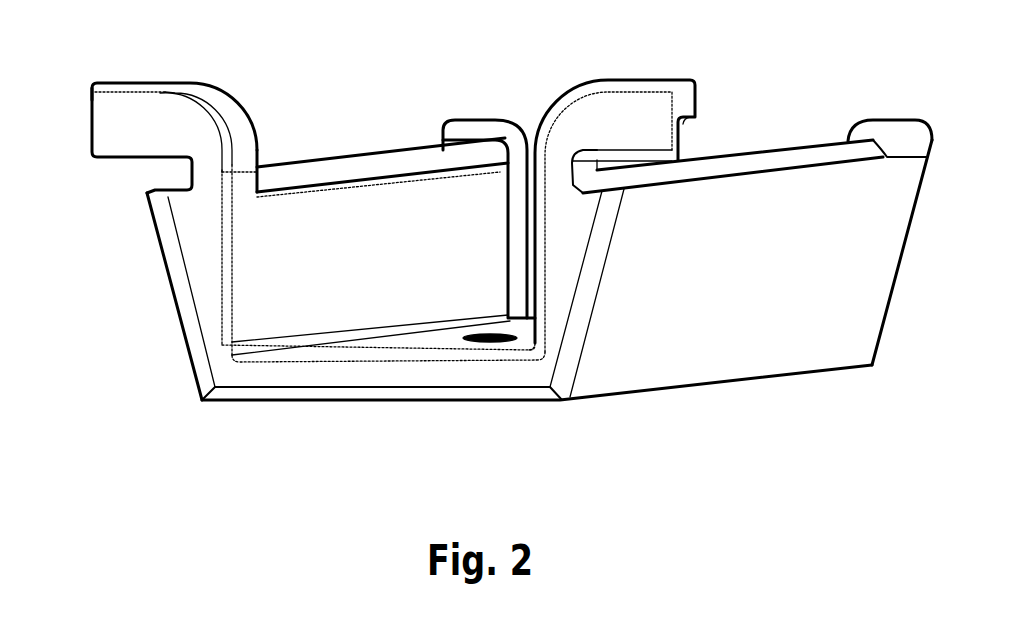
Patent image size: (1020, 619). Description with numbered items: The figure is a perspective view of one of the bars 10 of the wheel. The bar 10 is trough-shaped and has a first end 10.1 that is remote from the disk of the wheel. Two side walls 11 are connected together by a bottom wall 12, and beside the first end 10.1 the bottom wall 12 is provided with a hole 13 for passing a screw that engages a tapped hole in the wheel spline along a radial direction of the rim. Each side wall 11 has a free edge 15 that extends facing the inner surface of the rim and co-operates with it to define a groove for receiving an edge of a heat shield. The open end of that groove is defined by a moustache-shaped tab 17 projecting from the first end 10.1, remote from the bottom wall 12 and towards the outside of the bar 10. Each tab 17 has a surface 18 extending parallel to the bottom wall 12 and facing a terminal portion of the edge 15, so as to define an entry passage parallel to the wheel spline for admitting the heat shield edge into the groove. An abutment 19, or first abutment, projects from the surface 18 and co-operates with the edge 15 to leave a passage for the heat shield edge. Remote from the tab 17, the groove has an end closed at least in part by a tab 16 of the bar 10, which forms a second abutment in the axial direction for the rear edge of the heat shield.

The bar 10 is at (313, 408).
The first end 10.1 is at (527, 140).
The side wall 11 is at (167, 305).
The bottom wall 12 is at (413, 338).
The hole 13 is at (492, 338).
The free edge 15 is at (153, 190).
The tab 16 is at (900, 132).
The moustache-shaped tab 17 is at (128, 100).
The surface 18 is at (688, 122).
The abutment 19 is at (120, 136).